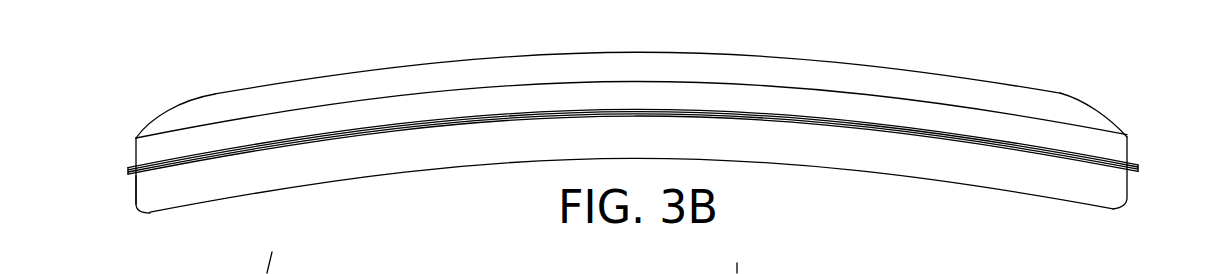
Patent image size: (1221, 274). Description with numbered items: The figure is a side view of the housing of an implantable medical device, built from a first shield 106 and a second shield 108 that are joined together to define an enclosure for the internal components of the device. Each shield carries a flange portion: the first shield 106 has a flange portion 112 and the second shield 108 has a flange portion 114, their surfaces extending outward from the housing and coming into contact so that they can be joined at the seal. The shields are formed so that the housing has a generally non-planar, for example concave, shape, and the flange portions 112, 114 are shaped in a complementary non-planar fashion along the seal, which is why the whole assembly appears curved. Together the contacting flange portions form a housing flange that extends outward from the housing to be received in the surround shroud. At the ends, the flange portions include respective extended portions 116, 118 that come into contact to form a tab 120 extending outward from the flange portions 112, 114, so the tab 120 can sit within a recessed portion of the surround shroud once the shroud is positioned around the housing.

The first shield 106 is at (935, 92).
The second shield 108 is at (773, 138).
The flange portion 112 is at (503, 53).
The flange portion 114 is at (472, 123).
The extended portion 116 is at (132, 170).
The extended portion 118 is at (137, 177).
The tab 120 is at (1135, 167).